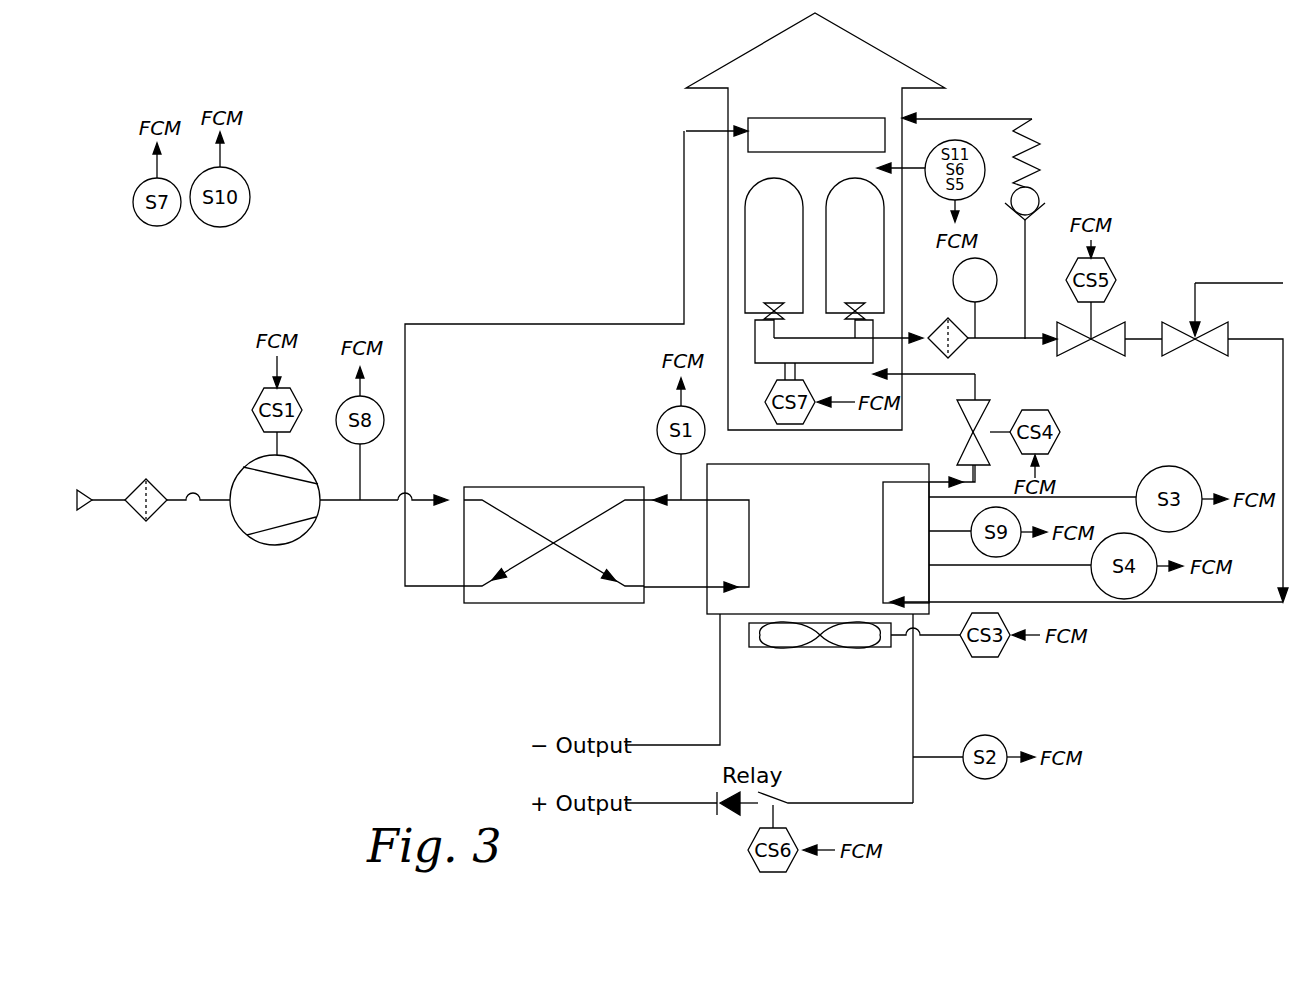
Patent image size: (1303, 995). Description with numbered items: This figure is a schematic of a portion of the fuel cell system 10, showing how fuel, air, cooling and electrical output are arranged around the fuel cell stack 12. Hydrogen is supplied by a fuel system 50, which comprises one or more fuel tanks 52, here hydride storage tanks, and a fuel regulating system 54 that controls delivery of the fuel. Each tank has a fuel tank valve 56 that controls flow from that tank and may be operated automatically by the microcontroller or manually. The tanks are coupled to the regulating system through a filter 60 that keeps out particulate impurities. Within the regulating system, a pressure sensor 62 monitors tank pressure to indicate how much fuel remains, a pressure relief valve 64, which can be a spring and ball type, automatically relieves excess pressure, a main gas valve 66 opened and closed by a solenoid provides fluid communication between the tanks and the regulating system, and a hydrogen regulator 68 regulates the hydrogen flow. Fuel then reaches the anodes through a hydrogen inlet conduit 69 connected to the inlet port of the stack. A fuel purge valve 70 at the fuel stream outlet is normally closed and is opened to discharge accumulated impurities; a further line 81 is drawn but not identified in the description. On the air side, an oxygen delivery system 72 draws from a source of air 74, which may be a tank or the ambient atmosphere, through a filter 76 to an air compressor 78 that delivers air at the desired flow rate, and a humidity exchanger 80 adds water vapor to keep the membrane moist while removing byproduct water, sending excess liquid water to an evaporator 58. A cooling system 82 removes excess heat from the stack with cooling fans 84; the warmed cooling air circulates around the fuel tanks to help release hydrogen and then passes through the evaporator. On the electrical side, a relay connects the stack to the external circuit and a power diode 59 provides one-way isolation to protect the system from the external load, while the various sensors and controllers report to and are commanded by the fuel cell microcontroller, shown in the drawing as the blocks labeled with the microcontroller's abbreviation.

The fuel cell system 10 is at (212, 736).
The fuel cell stack 12 is at (697, 614).
The fuel system 50 is at (1061, 72).
The fuel tanks 52 is at (803, 205).
The fuel regulating system 54 is at (1170, 121).
The fuel tank valve 56 is at (781, 314).
The evaporator 58 is at (888, 117).
The power diode 59 is at (728, 815).
The filter 60 is at (958, 352).
The pressure sensor 62 is at (953, 285).
The pressure relief valve 64 is at (1038, 192).
The main gas valve 66 is at (1060, 322).
The hydrogen regulator 68 is at (1162, 322).
The hydrogen inlet conduit 69 is at (1238, 603).
The fuel purge valve 70 is at (957, 432).
The oxygen delivery system 72 is at (227, 633).
The source of oxygen or air 74 is at (78, 492).
The filter 76 is at (152, 485).
The air compressor 78 is at (312, 532).
The humidity exchanger 80 is at (553, 487).
The air bypass line 81 is at (418, 592).
The cooling system 82 is at (658, 686).
The cooling fans 84 is at (891, 647).